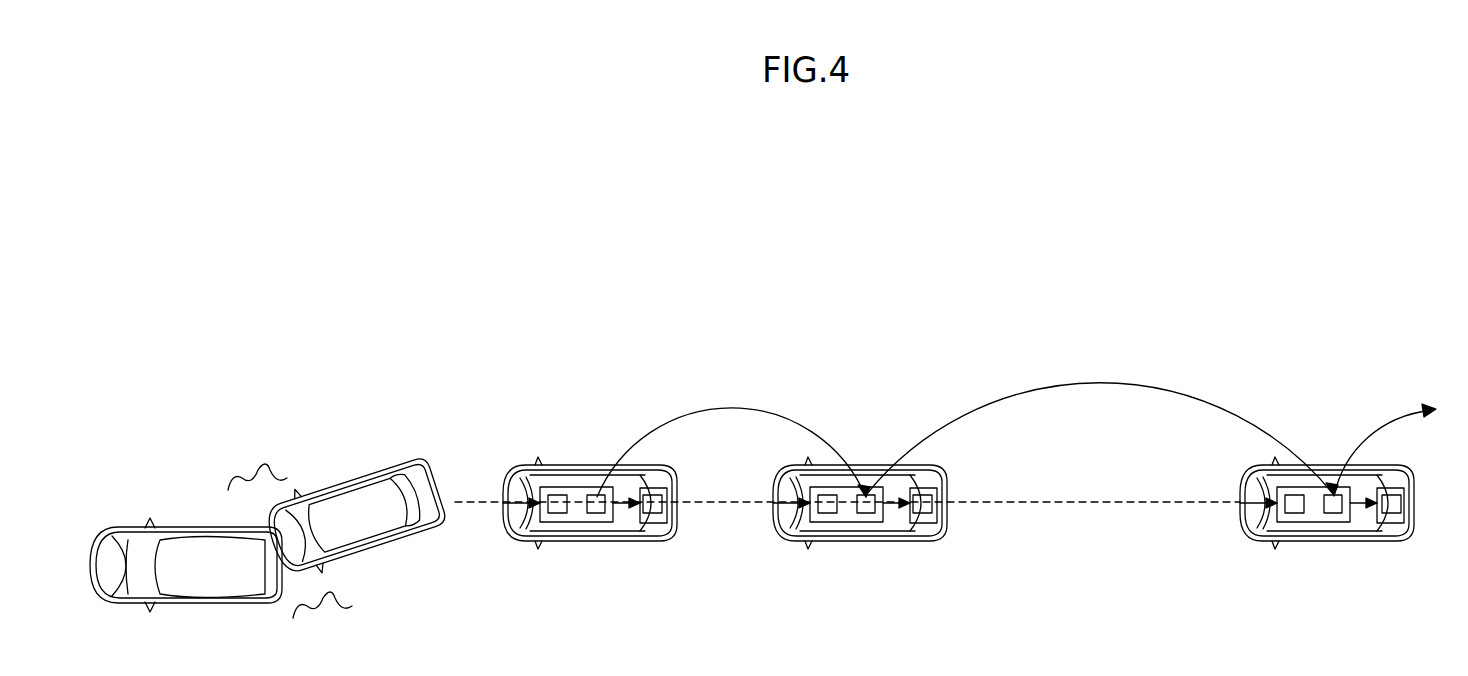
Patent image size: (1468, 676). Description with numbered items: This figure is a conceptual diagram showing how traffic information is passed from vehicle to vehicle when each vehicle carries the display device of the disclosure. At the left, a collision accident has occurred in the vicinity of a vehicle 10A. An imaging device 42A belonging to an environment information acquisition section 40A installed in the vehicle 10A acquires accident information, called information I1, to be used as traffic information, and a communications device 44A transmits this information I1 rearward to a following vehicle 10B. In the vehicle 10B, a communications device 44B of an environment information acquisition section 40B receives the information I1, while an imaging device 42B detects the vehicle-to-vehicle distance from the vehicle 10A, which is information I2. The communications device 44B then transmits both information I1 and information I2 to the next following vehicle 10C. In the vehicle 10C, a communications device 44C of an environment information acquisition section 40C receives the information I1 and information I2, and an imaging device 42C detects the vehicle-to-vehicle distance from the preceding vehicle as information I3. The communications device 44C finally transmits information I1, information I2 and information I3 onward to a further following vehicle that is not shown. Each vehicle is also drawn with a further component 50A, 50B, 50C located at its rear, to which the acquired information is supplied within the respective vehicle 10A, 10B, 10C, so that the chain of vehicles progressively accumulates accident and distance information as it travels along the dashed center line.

The vehicle 10A is at (586, 440).
The following vehicle 10B is at (824, 410).
The following vehicle 10C is at (1318, 420).
The environment information acquisition section 40A is at (542, 520).
The environment information acquisition section 40B is at (812, 520).
The environment information acquisition section 40C is at (1279, 520).
The imaging device 42A is at (556, 514).
The imaging device 42B is at (826, 514).
The imaging device 42C is at (1293, 514).
The communications device 44A is at (596, 514).
The communications device 44B is at (866, 514).
The communications device 44C is at (1333, 514).
The notification device 50A is at (652, 514).
The notification device 50B is at (922, 514).
The notification device 50C is at (1390, 514).
The information I1 is at (725, 410).
The information I2 is at (723, 499).
The information I3 is at (1116, 499).